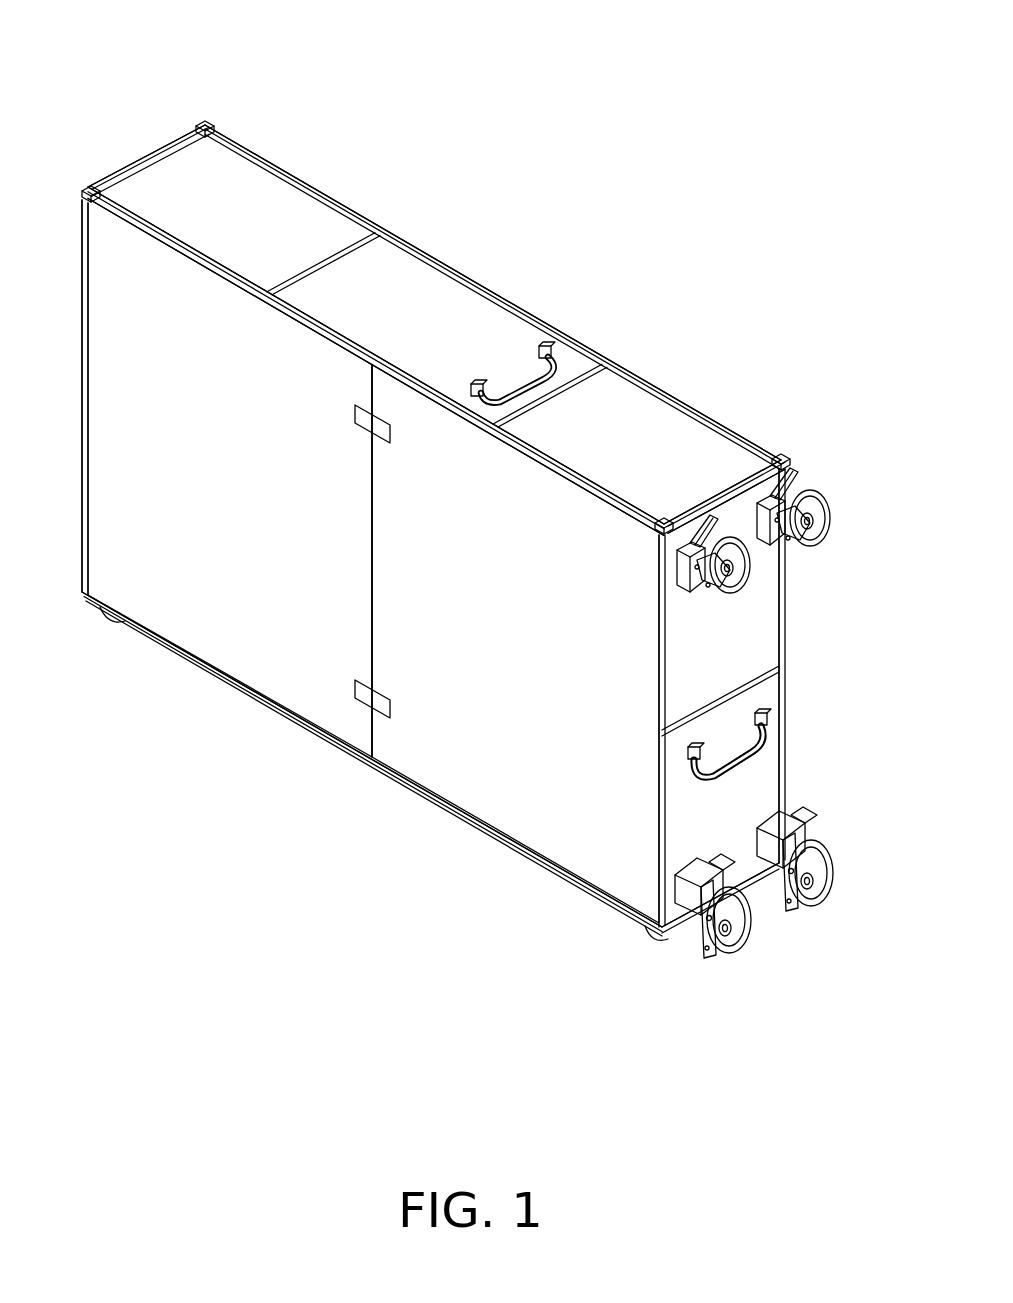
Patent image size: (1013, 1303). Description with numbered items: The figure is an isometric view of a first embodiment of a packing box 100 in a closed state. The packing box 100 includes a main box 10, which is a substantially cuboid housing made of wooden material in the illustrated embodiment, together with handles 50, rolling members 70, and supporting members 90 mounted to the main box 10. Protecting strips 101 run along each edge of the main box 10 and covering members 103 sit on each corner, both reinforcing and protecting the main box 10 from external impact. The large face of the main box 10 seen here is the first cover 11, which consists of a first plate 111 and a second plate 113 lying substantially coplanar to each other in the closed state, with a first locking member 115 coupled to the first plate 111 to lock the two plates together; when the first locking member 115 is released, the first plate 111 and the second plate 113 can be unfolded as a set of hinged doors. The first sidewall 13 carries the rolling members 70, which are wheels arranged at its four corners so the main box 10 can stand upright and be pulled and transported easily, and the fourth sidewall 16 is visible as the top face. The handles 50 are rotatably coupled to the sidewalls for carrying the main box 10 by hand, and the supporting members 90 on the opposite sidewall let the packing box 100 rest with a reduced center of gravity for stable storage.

The packing box 100 is at (173, 68).
The main box 10 is at (145, 500).
The protecting strips 101 is at (715, 420).
The covering members 103 is at (780, 456).
The fourth sidewall 16 is at (463, 330).
The first cover 11 is at (228, 803).
The first plate 111 is at (325, 683).
The second plate 113 is at (460, 765).
The first locking member 115 is at (365, 705).
The first sidewall 13 is at (765, 696).
The handles 50 is at (760, 750).
The rolling members 70 is at (824, 853).
The supporting members 90 is at (113, 612).